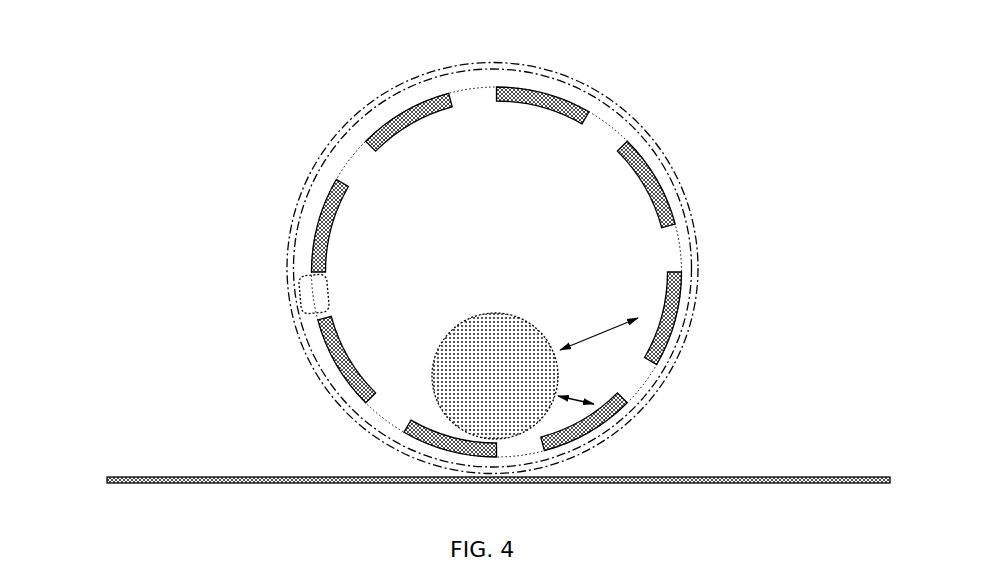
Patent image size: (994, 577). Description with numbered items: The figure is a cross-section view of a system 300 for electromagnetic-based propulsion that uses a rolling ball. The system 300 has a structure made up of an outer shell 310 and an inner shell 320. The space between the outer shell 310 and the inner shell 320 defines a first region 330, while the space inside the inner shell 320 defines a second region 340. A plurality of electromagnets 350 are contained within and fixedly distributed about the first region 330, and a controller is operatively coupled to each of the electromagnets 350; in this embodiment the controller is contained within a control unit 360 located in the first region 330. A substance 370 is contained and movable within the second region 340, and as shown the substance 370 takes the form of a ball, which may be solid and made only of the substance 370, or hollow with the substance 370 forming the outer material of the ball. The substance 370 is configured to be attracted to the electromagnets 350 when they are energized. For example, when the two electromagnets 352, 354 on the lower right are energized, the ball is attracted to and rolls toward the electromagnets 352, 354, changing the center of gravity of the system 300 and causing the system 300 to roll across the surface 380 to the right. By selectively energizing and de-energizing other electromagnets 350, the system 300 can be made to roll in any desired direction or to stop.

The system 300 is at (142, 98).
The outer shell 310 is at (372, 105).
The inner shell 320 is at (361, 168).
The first region 330 is at (475, 91).
The second region 340 is at (577, 157).
The electromagnets 350 is at (327, 215).
The electromagnet 352 is at (668, 297).
The electromagnet 354 is at (618, 411).
The control unit 360 is at (314, 292).
The substance 370 is at (460, 370).
The surface 380 is at (185, 477).